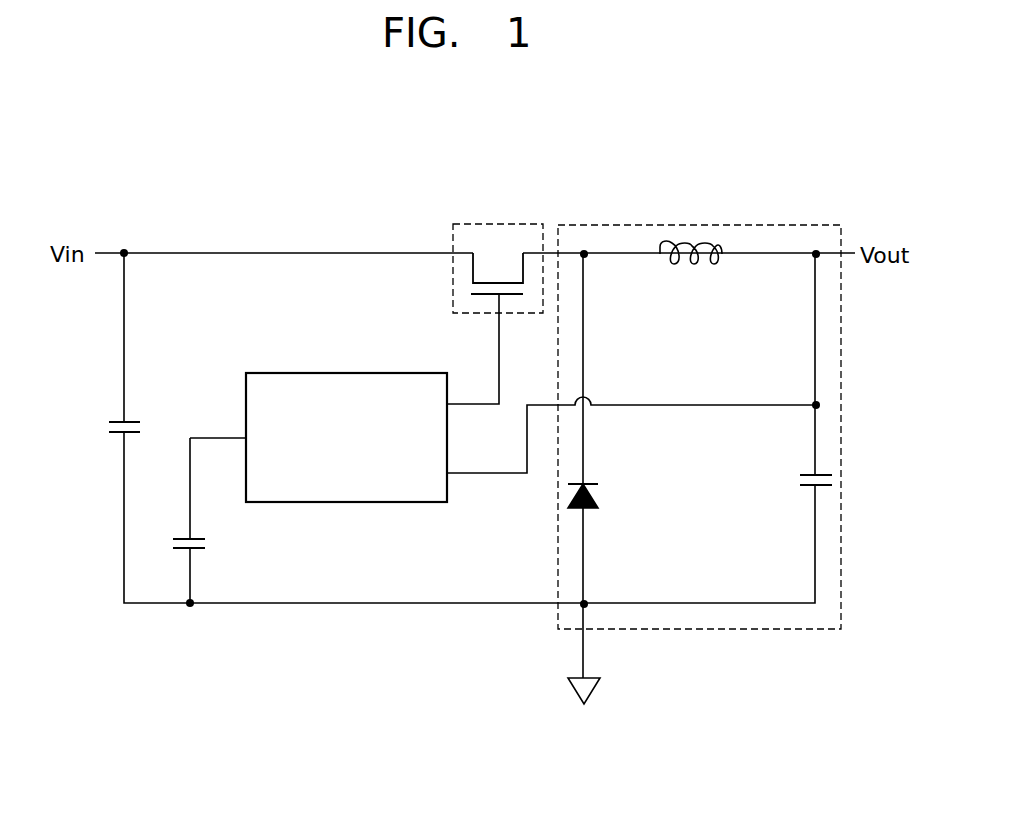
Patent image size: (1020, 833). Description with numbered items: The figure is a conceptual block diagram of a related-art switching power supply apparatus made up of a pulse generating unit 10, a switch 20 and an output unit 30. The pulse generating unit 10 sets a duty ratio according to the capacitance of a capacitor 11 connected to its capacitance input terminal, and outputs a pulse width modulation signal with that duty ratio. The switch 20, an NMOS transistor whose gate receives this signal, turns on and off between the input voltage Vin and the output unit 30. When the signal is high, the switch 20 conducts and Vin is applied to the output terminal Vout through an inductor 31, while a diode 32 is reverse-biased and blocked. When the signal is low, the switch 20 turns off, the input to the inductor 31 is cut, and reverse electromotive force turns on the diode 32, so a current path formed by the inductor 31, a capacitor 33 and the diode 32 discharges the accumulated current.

The pulse generating unit 10 is at (412, 503).
The capacitor 11 is at (205, 540).
The switch 20 is at (453, 240).
The output unit 30 is at (704, 630).
The inductor 31 is at (688, 258).
The diode 32 is at (598, 492).
The capacitor 33 is at (798, 478).